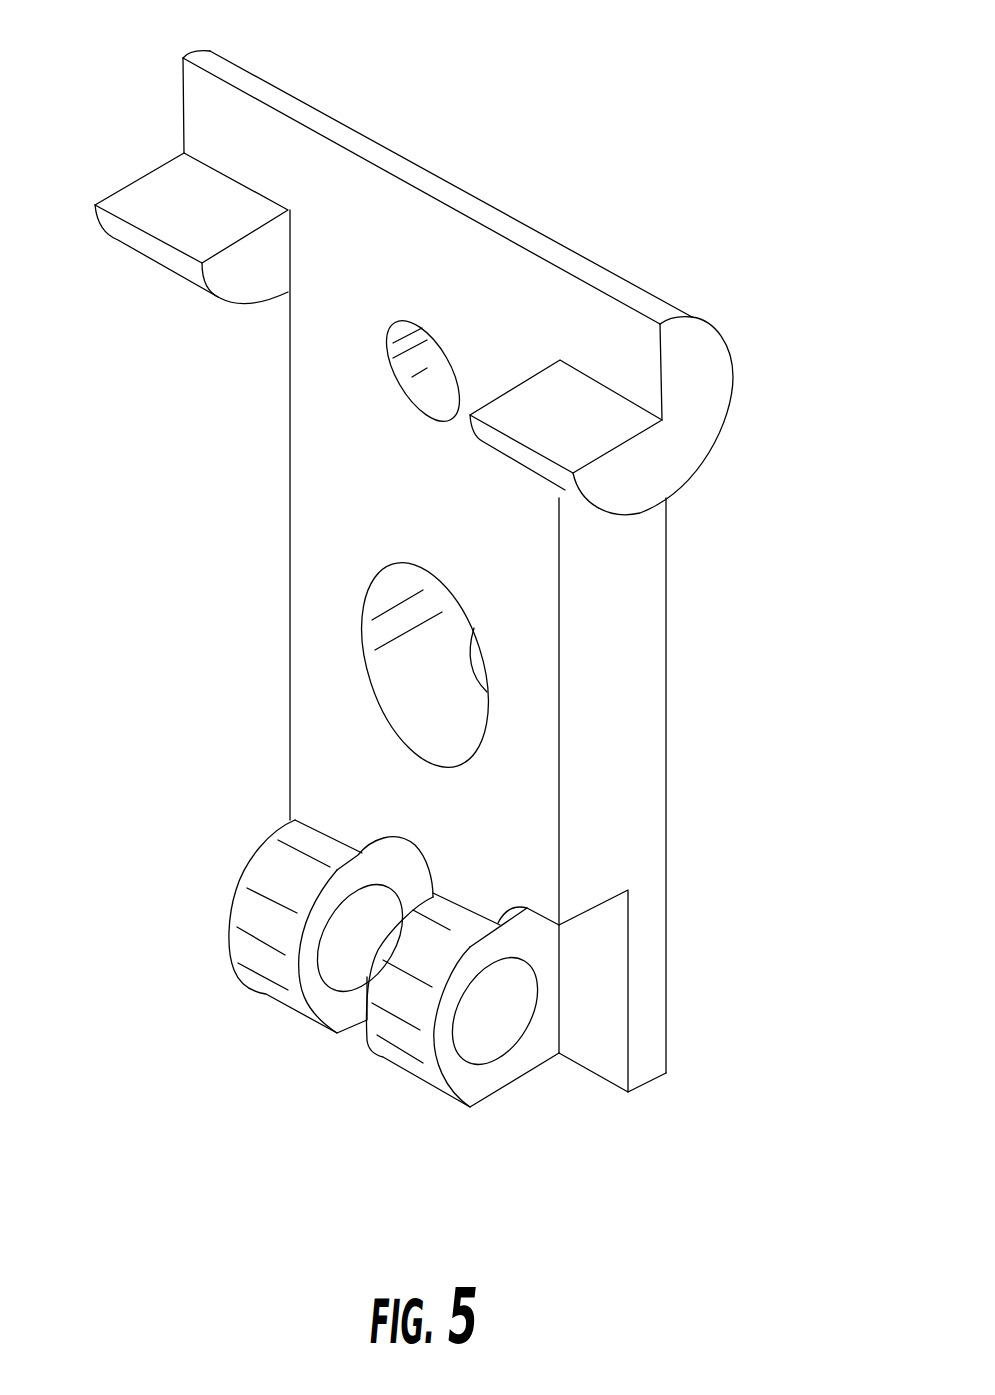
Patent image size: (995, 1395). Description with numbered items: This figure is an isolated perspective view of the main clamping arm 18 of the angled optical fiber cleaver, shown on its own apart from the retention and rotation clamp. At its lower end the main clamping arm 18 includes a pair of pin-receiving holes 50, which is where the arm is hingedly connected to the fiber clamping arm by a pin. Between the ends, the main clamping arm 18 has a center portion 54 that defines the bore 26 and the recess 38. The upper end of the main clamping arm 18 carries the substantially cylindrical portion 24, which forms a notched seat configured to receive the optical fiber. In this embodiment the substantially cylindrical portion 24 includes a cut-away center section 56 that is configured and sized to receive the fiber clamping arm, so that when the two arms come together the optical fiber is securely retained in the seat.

The main clamping arm 18 is at (545, 143).
The substantially cylindrical portion 24 is at (727, 322).
The bore 26 is at (513, 672).
The recess 38 is at (390, 387).
The pin-receiving holes 50 is at (540, 1100).
The center portion 54 is at (688, 760).
The cut-away center section 56 is at (353, 277).